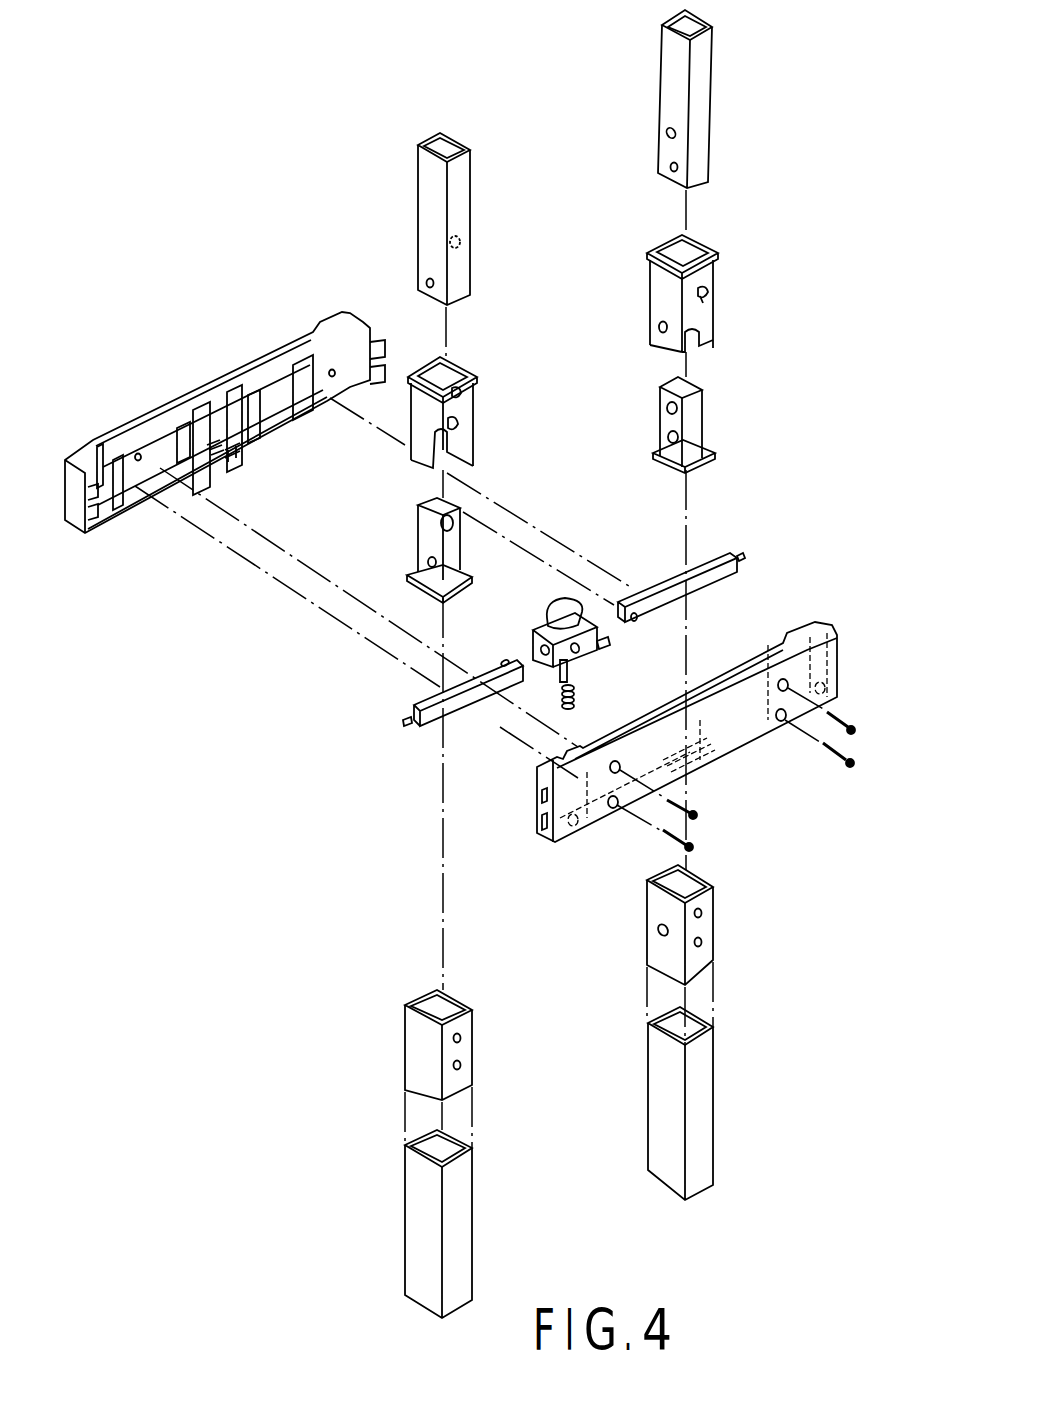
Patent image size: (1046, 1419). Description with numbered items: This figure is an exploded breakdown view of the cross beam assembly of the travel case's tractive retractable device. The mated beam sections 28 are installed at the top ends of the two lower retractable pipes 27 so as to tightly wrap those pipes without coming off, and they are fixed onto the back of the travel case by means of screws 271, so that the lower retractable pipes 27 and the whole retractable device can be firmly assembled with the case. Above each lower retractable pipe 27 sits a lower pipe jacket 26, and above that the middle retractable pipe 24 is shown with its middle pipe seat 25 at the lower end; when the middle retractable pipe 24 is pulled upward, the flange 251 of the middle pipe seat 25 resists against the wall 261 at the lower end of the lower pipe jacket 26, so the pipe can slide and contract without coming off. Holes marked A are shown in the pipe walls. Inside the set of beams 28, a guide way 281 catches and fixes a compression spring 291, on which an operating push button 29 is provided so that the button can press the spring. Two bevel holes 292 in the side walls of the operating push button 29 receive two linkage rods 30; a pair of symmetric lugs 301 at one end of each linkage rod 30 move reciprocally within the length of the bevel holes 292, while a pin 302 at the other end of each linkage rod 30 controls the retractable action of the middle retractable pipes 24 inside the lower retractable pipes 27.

The middle retractable pipe 24 is at (708, 110).
The hole A is at (666, 140).
The lower pipe jacket 26 is at (708, 313).
The wall 261 is at (710, 353).
The middle pipe seat 25 is at (702, 420).
The flange 251 is at (712, 463).
The cross beam 28 is at (280, 360).
The guide way 281 is at (237, 463).
The operating push button 29 is at (562, 607).
The bevel hole 292 is at (597, 652).
The compression spring 291 is at (580, 703).
The linkage rod 30 is at (712, 580).
The lug 301 is at (505, 660).
The pin 302 is at (745, 556).
The screw 271 is at (853, 717).
The lower retractable pipe 27 is at (708, 957).